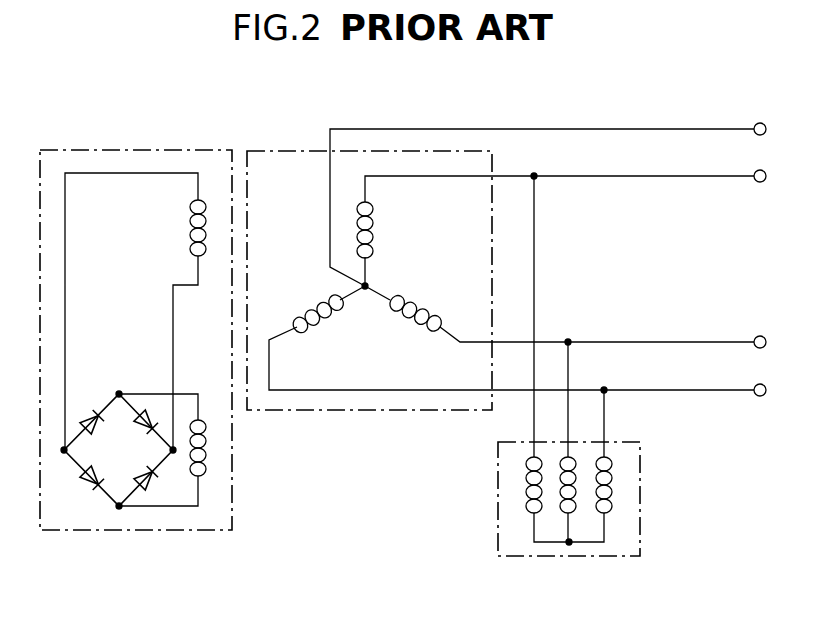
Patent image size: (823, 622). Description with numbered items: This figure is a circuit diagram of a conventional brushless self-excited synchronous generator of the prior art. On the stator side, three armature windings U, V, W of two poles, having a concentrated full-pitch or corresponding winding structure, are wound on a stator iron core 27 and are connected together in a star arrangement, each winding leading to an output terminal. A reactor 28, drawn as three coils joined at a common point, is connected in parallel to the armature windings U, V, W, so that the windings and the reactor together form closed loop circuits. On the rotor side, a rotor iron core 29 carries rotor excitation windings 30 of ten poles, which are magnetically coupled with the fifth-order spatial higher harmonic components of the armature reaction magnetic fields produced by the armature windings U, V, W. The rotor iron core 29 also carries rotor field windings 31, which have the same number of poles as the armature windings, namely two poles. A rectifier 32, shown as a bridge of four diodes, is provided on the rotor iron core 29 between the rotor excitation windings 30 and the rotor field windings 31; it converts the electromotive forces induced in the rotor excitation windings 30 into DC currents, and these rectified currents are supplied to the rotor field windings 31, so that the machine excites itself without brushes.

The stator iron core 27 is at (290, 150).
The reactor 28 is at (498, 488).
The rotor iron core 29 is at (160, 148).
The rotor excitation windings 30 is at (208, 461).
The rotor field windings 31 is at (187, 224).
The rectifier 32 is at (105, 488).
The armature winding U is at (373, 221).
The armature winding V is at (410, 325).
The armature winding W is at (317, 307).